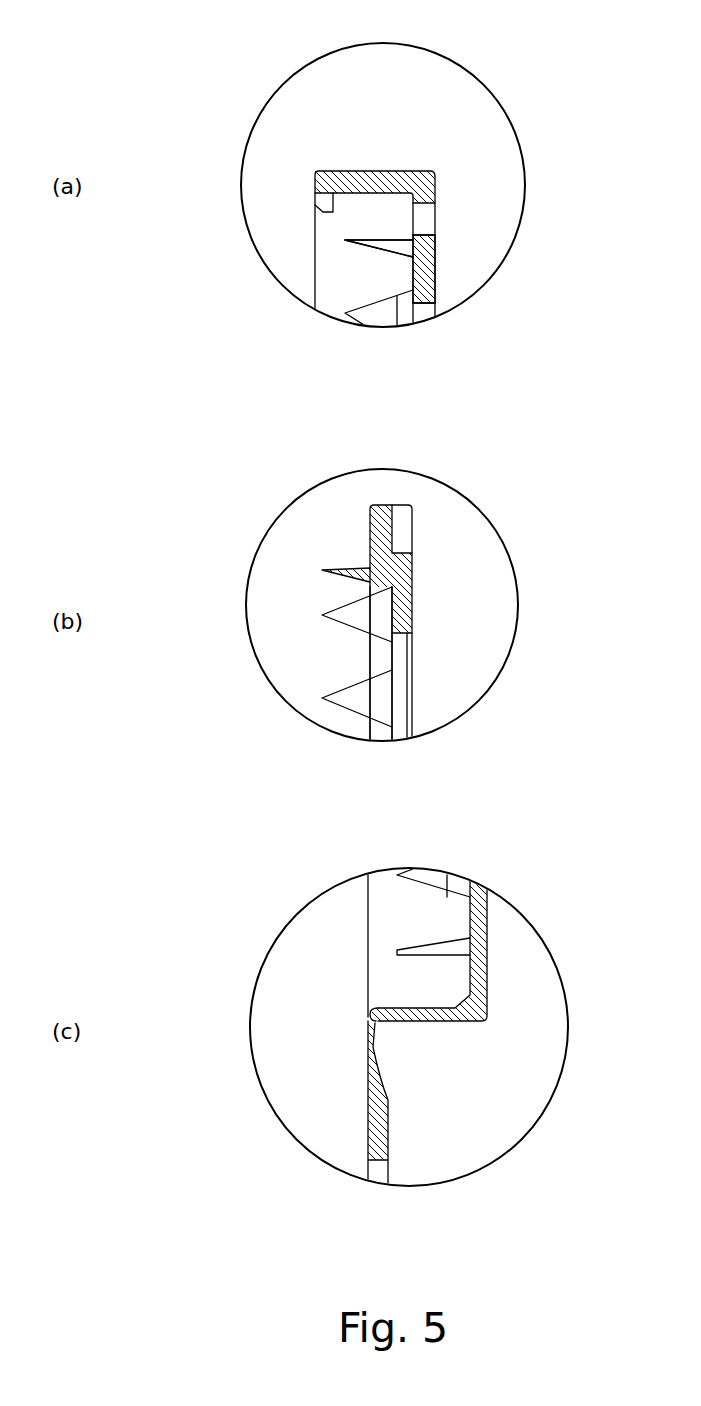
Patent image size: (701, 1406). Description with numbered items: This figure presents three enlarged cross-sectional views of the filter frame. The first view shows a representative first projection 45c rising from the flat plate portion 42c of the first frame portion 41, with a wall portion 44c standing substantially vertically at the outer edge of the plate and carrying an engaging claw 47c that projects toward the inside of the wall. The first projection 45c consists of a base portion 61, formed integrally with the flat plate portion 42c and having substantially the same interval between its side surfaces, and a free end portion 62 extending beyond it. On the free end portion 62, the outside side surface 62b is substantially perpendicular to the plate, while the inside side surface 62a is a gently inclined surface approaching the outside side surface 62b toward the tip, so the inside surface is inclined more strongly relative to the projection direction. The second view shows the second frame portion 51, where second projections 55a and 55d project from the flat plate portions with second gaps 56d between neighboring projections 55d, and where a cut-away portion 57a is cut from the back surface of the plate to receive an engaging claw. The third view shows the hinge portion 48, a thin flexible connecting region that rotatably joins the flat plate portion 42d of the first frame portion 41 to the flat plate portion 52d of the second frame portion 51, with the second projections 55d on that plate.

The wall portion 44c is at (365, 170).
The outside side surface 62b is at (382, 238).
The engaging claw 47c is at (322, 198).
The free end portion 62 is at (375, 243).
The base portion 61 is at (412, 246).
The flat plate portion 42c is at (430, 275).
The inside side surface 62a is at (357, 250).
The first projection 45c is at (385, 250).
The cut-away portion 57a is at (405, 530).
The second projection 55a is at (340, 568).
The second gap 56d is at (355, 656).
The second projection 55d is at (322, 698).
The second frame portion 51 is at (416, 652).
The flat plate portion 42d is at (480, 930).
The hinge portion 48 is at (368, 1014).
The first frame portion 41 is at (492, 985).
The flat plate portion 52d is at (390, 1147).